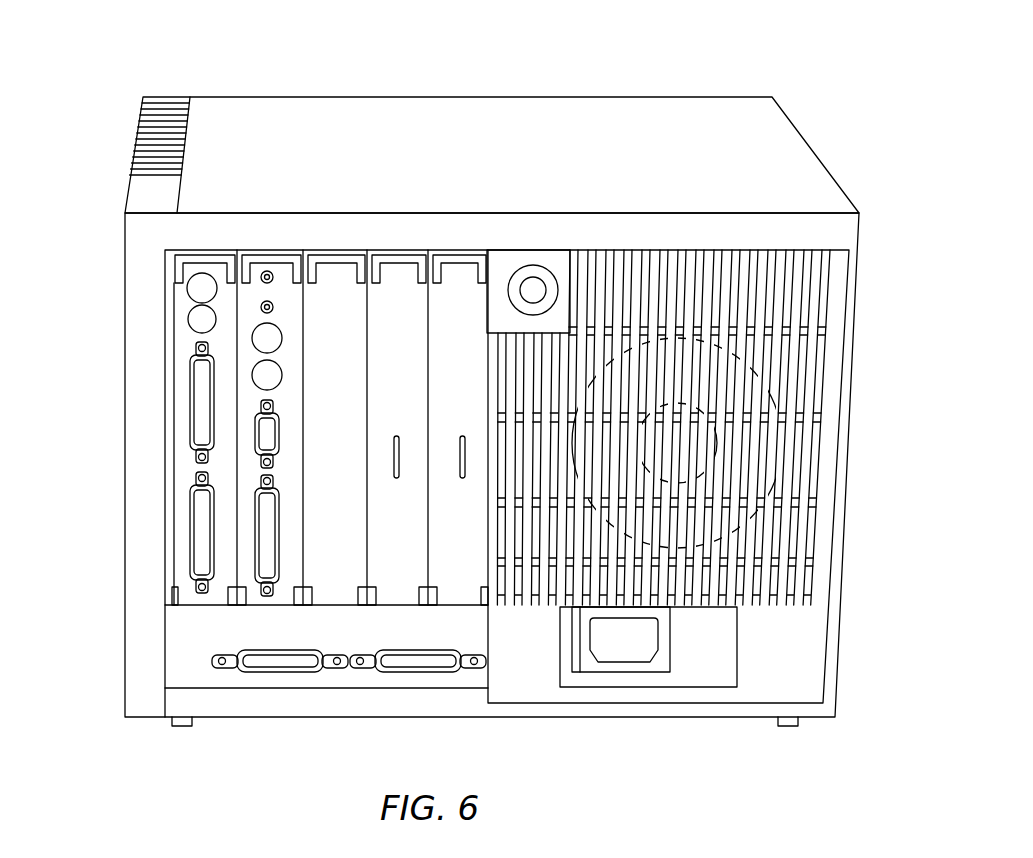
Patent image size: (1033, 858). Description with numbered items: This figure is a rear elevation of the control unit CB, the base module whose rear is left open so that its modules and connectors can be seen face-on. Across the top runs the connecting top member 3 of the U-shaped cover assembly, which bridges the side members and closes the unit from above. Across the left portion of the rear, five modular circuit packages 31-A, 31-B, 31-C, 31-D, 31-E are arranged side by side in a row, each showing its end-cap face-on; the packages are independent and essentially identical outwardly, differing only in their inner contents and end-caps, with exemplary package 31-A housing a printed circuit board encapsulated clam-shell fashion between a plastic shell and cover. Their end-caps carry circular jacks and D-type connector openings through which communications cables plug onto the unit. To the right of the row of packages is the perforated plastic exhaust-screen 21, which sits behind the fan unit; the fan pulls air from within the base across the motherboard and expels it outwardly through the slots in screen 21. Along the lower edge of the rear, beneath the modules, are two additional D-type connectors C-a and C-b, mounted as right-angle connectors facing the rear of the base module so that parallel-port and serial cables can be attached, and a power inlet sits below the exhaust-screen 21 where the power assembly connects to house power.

The control unit (base module / Controller) CB is at (721, 86).
The connecting top member 3 is at (648, 146).
The circuit package 31-A is at (185, 297).
The circuit package (module) 31-B is at (257, 273).
The circuit package (module) 31-C is at (332, 282).
The circuit package (module) 31-D is at (393, 287).
The circuit package (module) 31-E is at (458, 280).
The perforated plastic exhaust-screen 21 is at (810, 325).
The connector C-a is at (280, 673).
The connector C-b is at (425, 673).